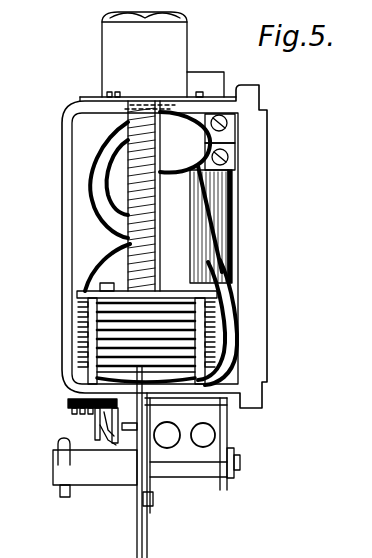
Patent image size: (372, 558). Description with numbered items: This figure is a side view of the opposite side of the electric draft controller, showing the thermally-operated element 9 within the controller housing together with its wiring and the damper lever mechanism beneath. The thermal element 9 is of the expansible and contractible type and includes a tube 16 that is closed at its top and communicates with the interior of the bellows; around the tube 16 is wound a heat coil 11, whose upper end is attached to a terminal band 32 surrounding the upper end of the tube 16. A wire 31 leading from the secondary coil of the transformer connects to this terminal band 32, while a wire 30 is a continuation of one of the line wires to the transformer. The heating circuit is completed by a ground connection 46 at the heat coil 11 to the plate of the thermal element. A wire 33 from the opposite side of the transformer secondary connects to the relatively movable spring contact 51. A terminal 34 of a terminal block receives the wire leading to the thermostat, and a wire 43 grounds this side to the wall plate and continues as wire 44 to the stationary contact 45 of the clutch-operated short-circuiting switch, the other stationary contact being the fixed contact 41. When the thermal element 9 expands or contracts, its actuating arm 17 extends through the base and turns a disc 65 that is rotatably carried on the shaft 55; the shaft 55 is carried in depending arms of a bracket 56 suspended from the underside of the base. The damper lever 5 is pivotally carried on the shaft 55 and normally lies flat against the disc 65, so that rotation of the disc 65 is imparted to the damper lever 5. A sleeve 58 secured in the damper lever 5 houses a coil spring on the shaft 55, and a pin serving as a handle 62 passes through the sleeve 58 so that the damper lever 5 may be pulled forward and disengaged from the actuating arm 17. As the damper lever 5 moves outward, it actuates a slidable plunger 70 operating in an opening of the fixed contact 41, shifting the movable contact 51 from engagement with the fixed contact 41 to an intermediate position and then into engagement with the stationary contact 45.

The damper lever 5 is at (137, 546).
The thermally-operated element 9 is at (72, 313).
The heat coil 11 is at (126, 128).
The tube 16 is at (140, 242).
The actuating arm 17 is at (110, 372).
The wire 30 is at (169, 196).
The wire 31 is at (191, 92).
The terminal band 32 is at (150, 107).
The wire 33 is at (243, 153).
The terminal 34 is at (244, 127).
The fixed contact 41 is at (115, 450).
The wire 43 is at (243, 177).
The wire 44 is at (239, 293).
The stationary contact 45 is at (83, 431).
The ground connection 46 is at (100, 286).
The movable spring contact 51 is at (110, 437).
The shaft 55 is at (240, 468).
The bracket 56 is at (223, 425).
The sleeve 58 is at (60, 480).
The handle 62 is at (65, 497).
The disc 65 is at (153, 503).
The slidable plunger 70 is at (219, 237).